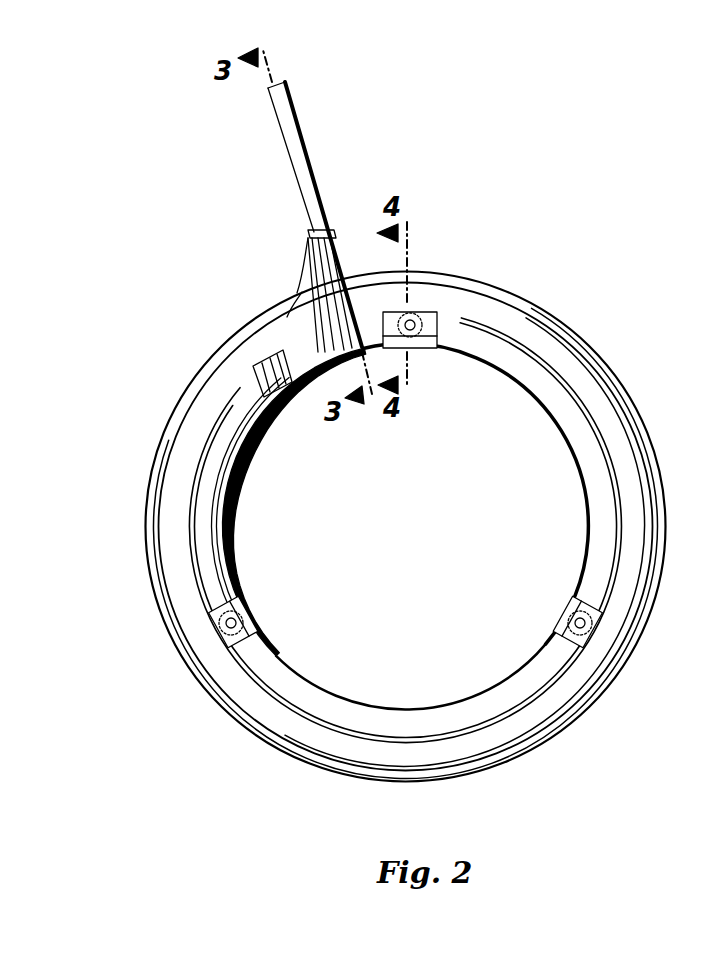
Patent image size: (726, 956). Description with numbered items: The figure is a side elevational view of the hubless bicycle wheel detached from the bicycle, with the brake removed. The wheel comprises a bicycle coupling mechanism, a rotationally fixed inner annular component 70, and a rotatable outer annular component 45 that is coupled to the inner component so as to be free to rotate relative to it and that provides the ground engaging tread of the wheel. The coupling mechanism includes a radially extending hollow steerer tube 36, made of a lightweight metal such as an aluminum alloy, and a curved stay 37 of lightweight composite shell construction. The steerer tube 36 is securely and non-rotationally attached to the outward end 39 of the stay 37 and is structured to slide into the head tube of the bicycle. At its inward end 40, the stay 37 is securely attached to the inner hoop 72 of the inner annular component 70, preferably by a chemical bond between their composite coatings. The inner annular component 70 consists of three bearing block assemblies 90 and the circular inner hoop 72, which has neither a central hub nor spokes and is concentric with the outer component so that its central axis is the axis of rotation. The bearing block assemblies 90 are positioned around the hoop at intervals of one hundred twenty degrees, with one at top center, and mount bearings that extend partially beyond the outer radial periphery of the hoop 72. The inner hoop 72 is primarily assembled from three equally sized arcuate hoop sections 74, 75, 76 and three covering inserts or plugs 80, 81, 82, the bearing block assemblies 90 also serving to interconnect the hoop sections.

The steerer tube 36 is at (298, 140).
The curved stay 37 is at (328, 316).
The outward end 39 is at (308, 243).
The inward end 40 is at (252, 370).
The outer annular component 45 is at (603, 347).
The inner annular component 70 is at (282, 598).
The inner hoop 72 is at (340, 697).
The arcuate hoop section 74 is at (220, 448).
The arcuate hoop section 75 is at (593, 452).
The arcuate hoop section 76 is at (412, 722).
The covering insert 80 is at (413, 348).
The covering insert 81 is at (560, 626).
The covering insert 82 is at (262, 632).
The bearing block assembly 90 is at (430, 322).